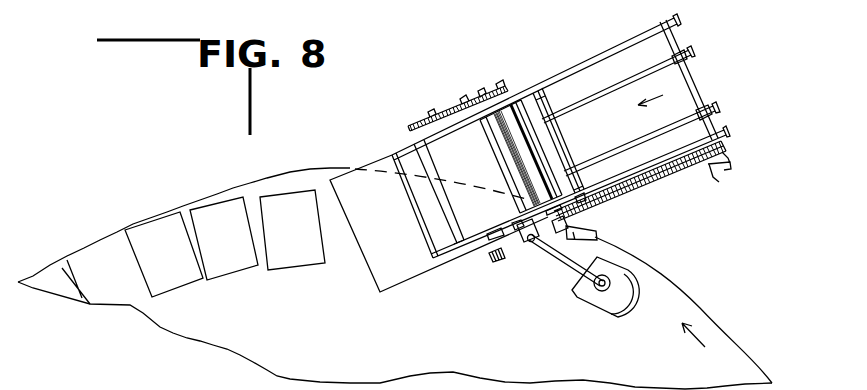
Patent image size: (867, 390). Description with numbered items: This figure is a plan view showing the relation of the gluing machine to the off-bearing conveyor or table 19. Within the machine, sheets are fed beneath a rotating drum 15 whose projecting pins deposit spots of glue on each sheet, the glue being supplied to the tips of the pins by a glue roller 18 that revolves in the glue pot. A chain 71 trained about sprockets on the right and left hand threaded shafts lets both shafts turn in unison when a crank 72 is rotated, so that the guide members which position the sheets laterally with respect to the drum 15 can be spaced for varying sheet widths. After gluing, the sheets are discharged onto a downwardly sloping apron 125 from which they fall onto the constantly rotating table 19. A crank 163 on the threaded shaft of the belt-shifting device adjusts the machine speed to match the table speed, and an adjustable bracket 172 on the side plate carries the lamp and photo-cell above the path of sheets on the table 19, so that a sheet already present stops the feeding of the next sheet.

The apron 125 is at (353, 186).
The drum 15 is at (444, 244).
The glue roller 18 is at (527, 158).
The chain 71 is at (656, 189).
The crank 72 is at (720, 171).
The crank 163 is at (574, 233).
The adjustable bracket 172 is at (555, 259).
The off-bearing conveyor or table 19 is at (673, 292).